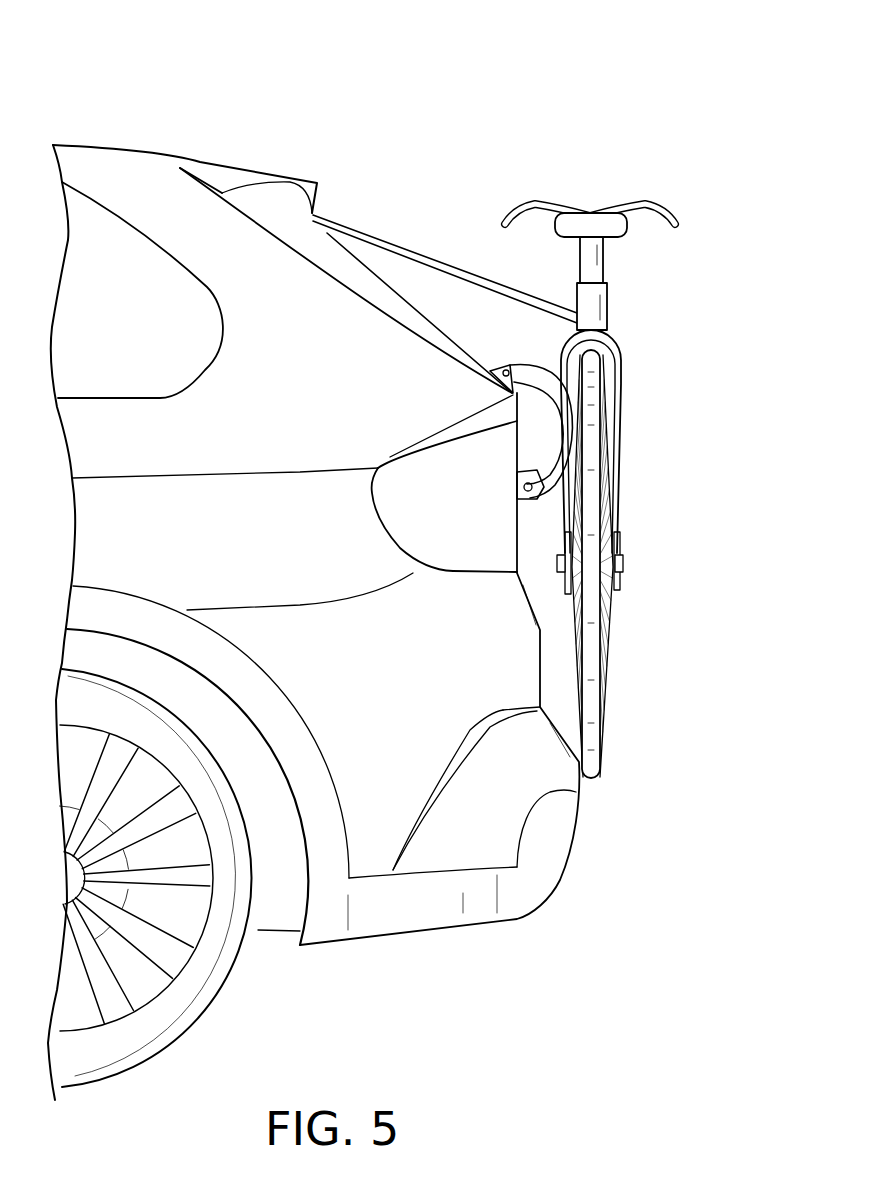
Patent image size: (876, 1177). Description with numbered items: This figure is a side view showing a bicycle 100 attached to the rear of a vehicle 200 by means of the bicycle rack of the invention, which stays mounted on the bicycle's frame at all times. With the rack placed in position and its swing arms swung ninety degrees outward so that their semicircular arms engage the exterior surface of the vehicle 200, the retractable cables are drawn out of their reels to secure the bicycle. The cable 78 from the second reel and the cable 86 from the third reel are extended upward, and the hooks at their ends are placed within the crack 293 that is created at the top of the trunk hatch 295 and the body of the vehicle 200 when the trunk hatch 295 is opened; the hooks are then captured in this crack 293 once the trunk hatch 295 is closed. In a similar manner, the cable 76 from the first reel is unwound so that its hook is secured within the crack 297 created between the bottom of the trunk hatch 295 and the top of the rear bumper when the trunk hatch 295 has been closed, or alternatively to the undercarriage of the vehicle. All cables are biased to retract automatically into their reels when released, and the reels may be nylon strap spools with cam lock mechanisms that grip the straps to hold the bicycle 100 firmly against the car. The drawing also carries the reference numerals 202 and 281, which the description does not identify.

The bicycle 100 is at (691, 171).
The vehicle 200 is at (238, 166).
The rear bumper 202 is at (540, 609).
The crack 293 is at (313, 213).
The strap 281 is at (377, 273).
The cable 86 is at (508, 328).
The cable 78 is at (509, 359).
The trunk hatch 295 is at (490, 372).
The crack 297 is at (568, 742).
The cable 76 is at (570, 690).